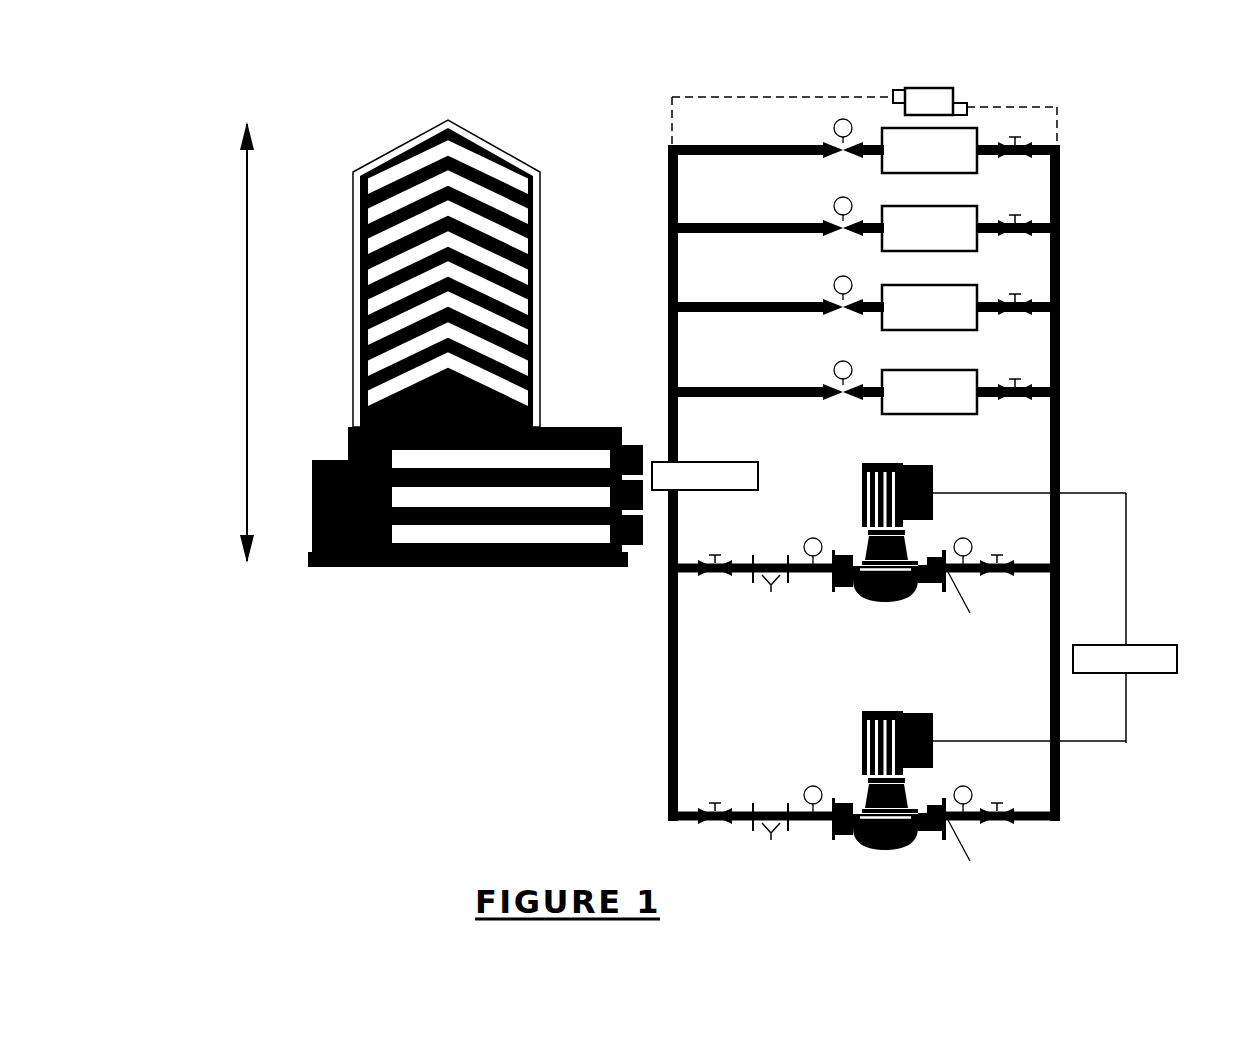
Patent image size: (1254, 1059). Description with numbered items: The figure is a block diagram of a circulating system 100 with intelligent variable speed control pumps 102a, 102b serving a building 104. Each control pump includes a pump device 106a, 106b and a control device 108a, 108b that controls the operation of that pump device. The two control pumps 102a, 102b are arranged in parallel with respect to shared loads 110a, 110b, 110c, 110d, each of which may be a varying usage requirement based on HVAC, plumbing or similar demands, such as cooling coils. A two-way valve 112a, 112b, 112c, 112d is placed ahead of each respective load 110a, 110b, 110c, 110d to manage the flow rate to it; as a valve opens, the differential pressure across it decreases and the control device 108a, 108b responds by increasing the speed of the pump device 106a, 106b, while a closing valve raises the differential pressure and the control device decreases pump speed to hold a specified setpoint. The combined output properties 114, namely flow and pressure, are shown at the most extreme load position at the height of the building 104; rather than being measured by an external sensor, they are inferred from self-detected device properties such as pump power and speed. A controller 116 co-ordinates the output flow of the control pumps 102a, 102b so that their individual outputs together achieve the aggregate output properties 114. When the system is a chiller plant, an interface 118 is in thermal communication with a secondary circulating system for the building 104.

The circulating system 100 is at (648, 54).
The building 104 is at (368, 130).
The output properties 114 is at (906, 90).
The 2-way valve 112a is at (833, 371).
The 2-way valve 112b is at (833, 287).
The 2-way valve 112c is at (833, 208).
The 2-way valve 112d is at (833, 127).
The load 110a is at (912, 413).
The load 110b is at (912, 330).
The load 110c is at (910, 252).
The load 110d is at (907, 174).
The interface 118 is at (710, 490).
The controller 116 is at (1150, 674).
The control pump 102a is at (881, 642).
The control pump 102b is at (896, 890).
The control device 108a is at (922, 465).
The control device 108b is at (922, 712).
The pump device 106a is at (853, 593).
The pump device 106b is at (853, 841).